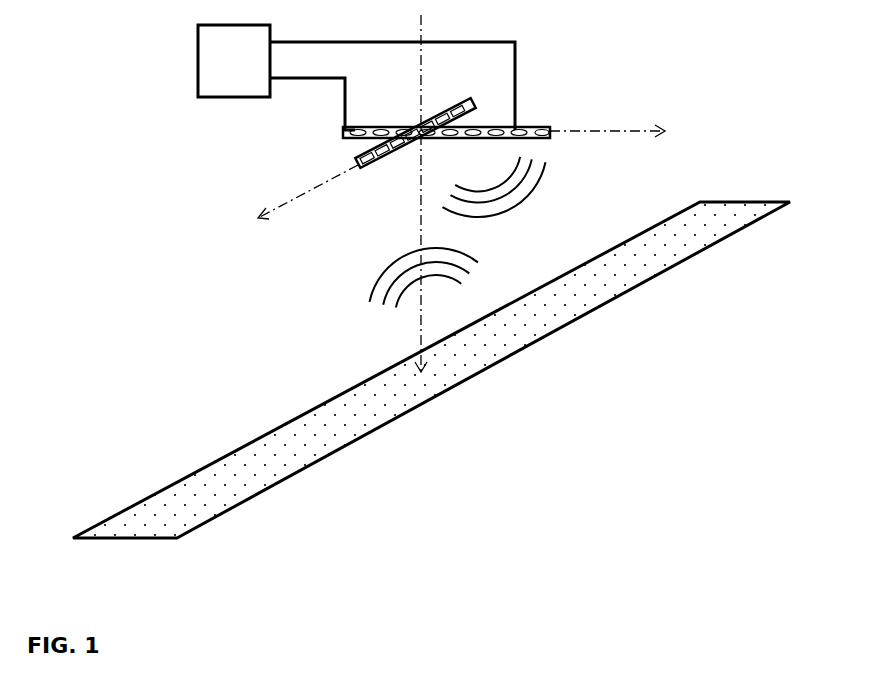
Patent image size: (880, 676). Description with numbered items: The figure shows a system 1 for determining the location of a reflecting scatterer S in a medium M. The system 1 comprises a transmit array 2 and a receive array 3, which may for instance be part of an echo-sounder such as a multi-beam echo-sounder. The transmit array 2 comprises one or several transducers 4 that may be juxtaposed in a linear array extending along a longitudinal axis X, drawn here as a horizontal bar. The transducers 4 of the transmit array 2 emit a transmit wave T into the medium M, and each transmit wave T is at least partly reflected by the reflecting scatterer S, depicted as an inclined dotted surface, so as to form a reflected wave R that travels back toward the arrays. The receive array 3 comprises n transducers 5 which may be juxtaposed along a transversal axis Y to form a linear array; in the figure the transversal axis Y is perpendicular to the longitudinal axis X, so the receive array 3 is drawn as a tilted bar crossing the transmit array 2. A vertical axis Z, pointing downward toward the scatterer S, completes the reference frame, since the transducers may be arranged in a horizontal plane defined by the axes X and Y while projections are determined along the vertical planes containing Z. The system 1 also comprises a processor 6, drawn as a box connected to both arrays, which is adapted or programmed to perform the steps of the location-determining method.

The system 1 is at (190, 189).
The transmit array 2 is at (525, 127).
The receive array 3 is at (447, 107).
The transducer 4 is at (449, 79).
The transducer 5 is at (368, 134).
The processor 6 is at (222, 60).
The longitudinal axis X is at (617, 108).
The transversal axis Y is at (303, 207).
The vertical axis Z is at (408, 193).
The transmit wave T is at (530, 197).
The reflected wave R is at (478, 252).
The reflecting scatterer S is at (632, 272).
The medium M is at (292, 309).